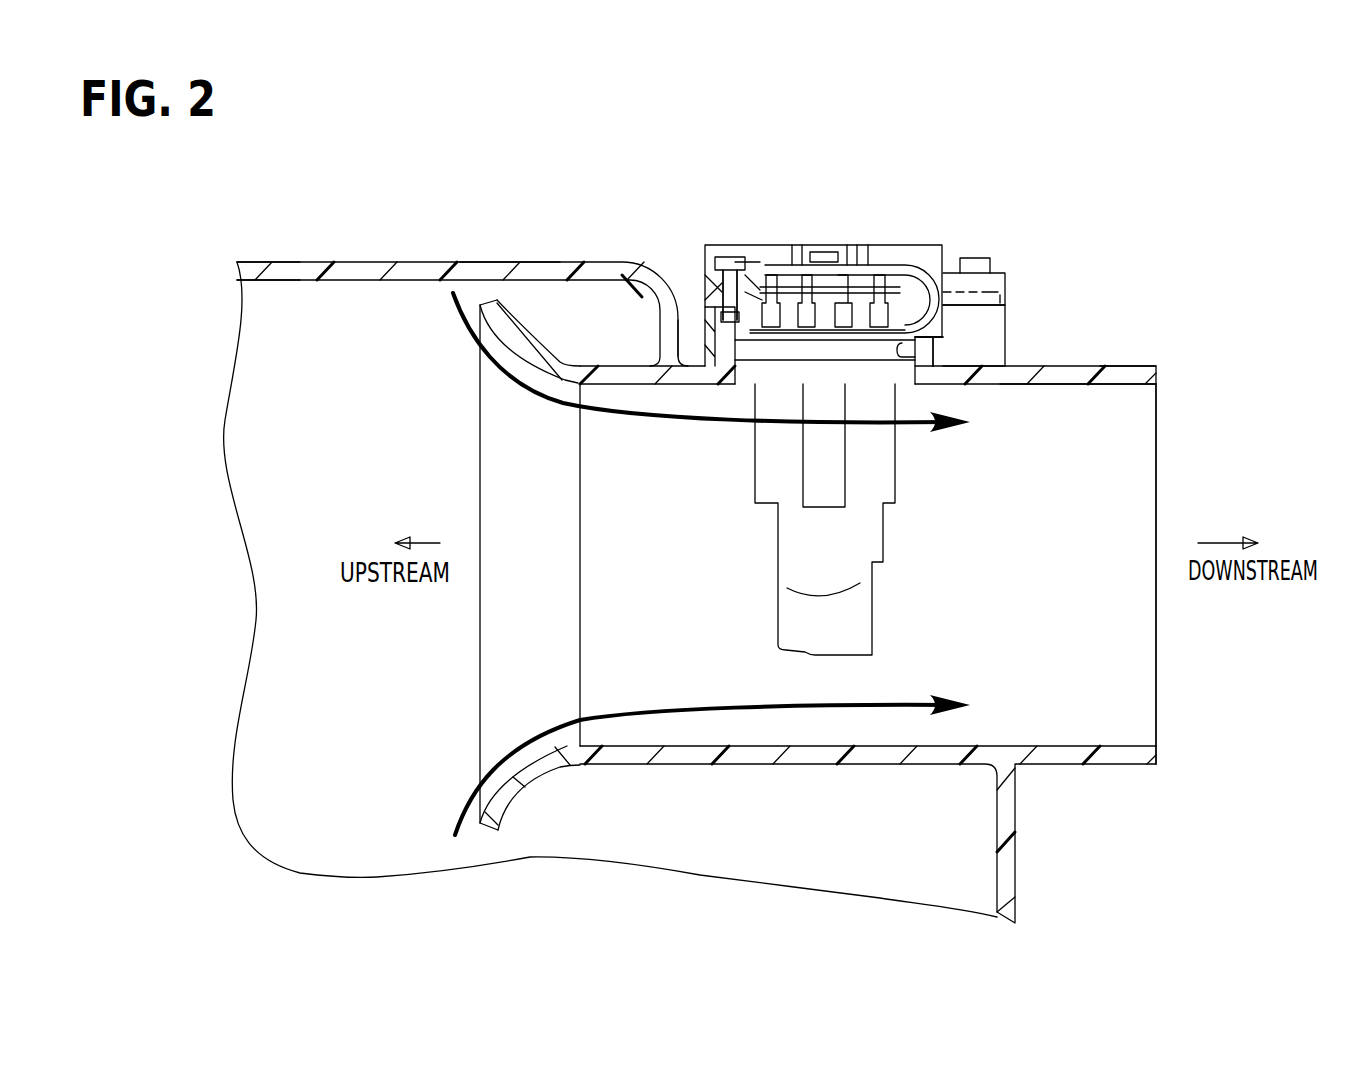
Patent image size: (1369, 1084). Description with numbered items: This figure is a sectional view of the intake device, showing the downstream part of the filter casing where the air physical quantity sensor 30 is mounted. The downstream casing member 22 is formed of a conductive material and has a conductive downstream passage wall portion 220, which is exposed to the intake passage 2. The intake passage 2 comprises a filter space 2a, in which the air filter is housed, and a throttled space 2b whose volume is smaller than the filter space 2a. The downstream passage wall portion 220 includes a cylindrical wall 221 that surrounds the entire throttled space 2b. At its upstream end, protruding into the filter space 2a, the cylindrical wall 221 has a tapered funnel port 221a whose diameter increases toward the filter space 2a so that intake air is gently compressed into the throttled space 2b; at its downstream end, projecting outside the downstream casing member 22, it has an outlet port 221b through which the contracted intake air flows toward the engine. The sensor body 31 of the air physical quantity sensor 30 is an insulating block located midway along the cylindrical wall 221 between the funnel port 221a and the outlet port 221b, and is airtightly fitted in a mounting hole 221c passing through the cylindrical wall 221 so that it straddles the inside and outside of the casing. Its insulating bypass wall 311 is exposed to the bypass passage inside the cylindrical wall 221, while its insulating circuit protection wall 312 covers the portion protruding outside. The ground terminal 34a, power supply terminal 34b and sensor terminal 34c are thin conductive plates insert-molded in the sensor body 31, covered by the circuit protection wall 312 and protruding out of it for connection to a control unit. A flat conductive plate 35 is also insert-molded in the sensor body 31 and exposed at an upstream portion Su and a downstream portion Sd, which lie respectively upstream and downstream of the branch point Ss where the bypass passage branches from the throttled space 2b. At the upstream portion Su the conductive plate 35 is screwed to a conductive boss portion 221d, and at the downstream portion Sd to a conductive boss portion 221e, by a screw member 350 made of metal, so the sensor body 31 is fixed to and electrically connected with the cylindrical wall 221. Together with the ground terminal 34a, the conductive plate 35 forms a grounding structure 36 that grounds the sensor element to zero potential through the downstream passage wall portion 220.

The intake passage 2 is at (358, 190).
The filter space 2a is at (317, 350).
The throttled space 2b is at (577, 480).
The downstream casing member 22 is at (503, 272).
The downstream passage wall portion 220 is at (640, 360).
The cylindrical wall 221 is at (923, 765).
The funnel port 221a is at (478, 827).
The outlet port 221b is at (1156, 722).
The mounting hole 221c is at (947, 350).
The conductive boss portion 221d is at (710, 330).
The conductive boss portion 221e is at (1000, 385).
The air physical quantity sensor 30 is at (942, 246).
The sensor body 31 is at (1150, 246).
The bypass wall 311 is at (1005, 310).
The circuit protection wall 312 is at (1003, 298).
The ground terminal 34a is at (843, 301).
The power supply terminal 34b is at (898, 284).
The sensor terminal 34c is at (822, 290).
The conductive plate 35 is at (760, 300).
The grounding structure 36 is at (865, 290).
The screw member 350 is at (727, 255).
The upstream portion Su is at (758, 250).
The downstream portion Sd is at (1107, 370).
The branch point Ss is at (765, 619).